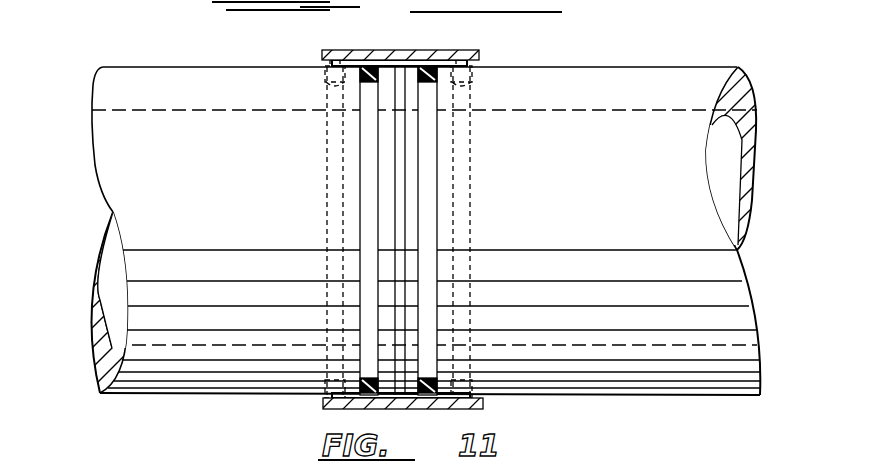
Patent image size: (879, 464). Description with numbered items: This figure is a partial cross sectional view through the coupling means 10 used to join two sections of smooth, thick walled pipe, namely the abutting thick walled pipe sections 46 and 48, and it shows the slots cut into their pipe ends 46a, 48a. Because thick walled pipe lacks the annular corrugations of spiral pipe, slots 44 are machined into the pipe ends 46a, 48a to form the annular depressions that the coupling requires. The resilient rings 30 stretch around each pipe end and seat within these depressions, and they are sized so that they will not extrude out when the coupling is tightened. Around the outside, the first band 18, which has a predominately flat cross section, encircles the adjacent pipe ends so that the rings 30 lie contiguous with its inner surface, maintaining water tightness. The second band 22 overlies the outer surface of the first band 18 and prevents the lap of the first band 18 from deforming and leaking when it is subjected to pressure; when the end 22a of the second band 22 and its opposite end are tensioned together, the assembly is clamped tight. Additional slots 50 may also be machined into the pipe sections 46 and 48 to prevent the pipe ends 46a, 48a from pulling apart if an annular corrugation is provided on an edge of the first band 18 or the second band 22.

The coupling means 10 is at (378, 36).
The first band 18 is at (440, 58).
The second band 22 is at (365, 53).
The end of second band 22a is at (478, 58).
The resilient rings 30 is at (377, 62).
The slots 44 is at (440, 85).
The thick walled pipe section 46 is at (201, 70).
The pipe end 46a is at (358, 133).
The thick walled pipe section 48 is at (707, 70).
The pipe end 48a is at (437, 155).
The additional slots 50 is at (320, 68).